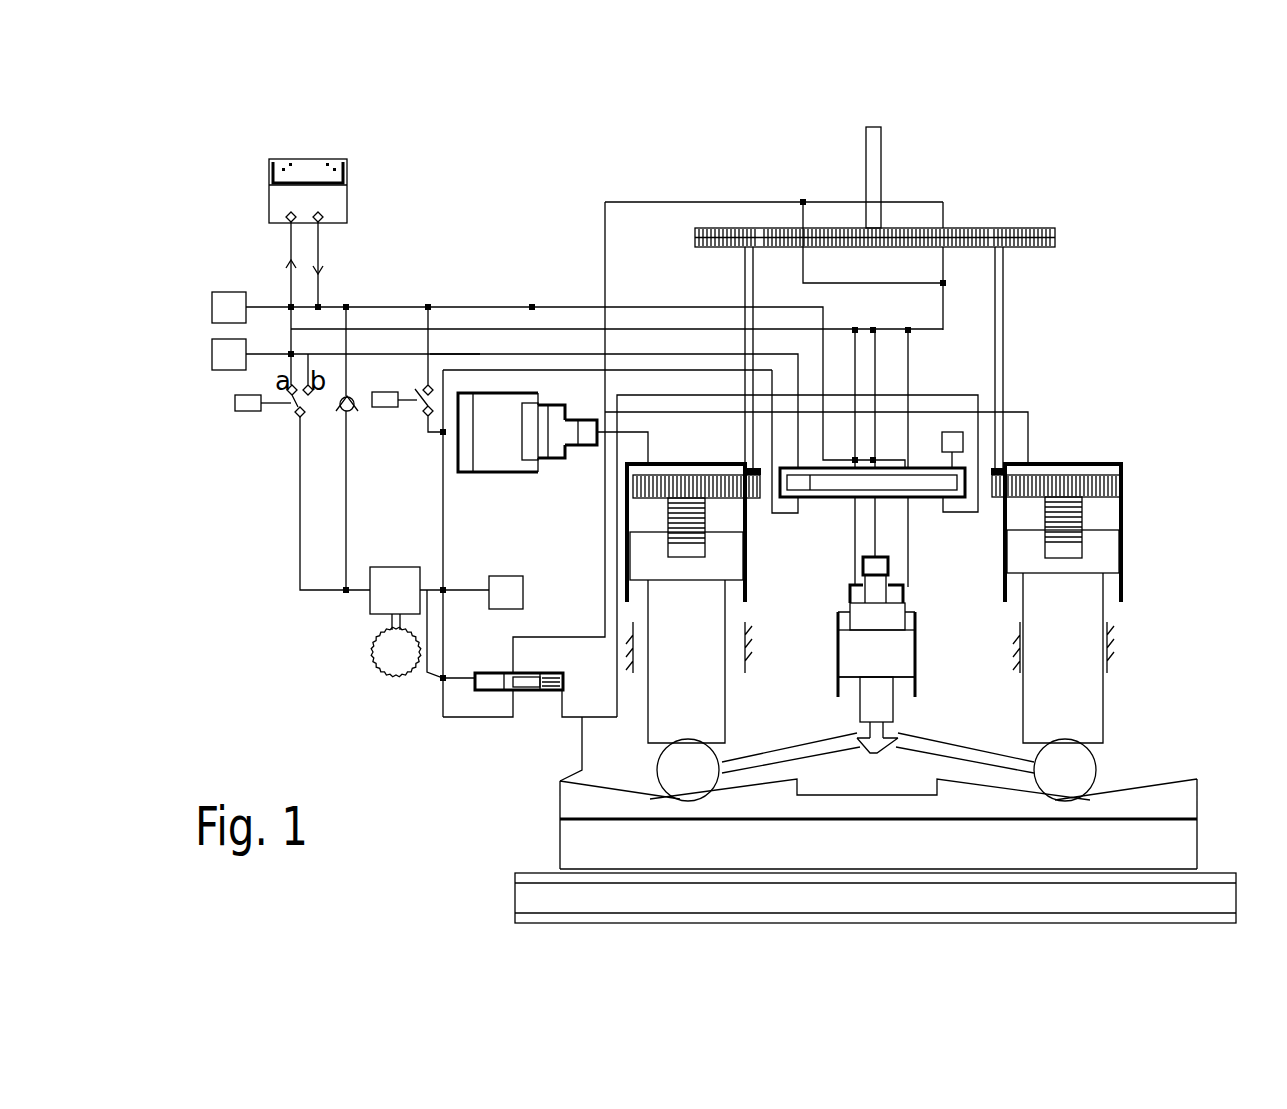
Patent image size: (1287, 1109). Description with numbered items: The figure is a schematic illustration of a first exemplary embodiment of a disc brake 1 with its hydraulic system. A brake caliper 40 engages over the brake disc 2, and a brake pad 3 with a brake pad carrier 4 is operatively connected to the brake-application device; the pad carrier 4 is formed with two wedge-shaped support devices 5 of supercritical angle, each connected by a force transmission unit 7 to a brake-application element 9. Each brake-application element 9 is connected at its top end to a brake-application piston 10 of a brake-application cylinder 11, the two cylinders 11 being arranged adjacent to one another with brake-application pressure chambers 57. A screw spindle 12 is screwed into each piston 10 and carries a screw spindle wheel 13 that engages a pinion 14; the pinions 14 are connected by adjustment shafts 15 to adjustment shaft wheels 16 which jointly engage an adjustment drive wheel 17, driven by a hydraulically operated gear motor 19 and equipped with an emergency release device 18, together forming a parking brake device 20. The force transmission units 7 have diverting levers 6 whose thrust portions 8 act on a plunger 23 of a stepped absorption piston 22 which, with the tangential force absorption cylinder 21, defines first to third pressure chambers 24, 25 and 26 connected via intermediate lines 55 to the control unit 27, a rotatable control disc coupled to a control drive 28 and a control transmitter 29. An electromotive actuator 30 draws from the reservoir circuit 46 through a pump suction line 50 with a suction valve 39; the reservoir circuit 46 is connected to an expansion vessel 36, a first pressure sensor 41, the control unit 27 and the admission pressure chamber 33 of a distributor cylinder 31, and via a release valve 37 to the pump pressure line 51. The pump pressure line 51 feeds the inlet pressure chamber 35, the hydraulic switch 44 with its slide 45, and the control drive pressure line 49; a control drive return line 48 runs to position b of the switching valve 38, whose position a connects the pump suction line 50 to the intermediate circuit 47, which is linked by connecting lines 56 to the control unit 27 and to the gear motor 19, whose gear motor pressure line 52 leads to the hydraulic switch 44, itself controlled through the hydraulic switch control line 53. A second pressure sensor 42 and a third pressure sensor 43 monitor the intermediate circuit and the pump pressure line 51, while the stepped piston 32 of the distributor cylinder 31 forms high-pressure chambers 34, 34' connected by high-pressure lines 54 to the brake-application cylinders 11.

The disc brake 1 is at (1221, 187).
The brake disc 2 is at (1225, 897).
The brake pad 3 is at (1185, 847).
The brake pad carrier 4 is at (1187, 797).
The wedge-shaped support device 5 is at (617, 790).
The diverting lever 6 is at (940, 753).
The force transmission unit 7 is at (672, 795).
The thrust portion 8 is at (877, 753).
The brake-application element 9 is at (700, 700).
The brake-application piston 10 is at (722, 555).
The brake-application cylinder 11 is at (744, 600).
The screw spindle 12 is at (690, 522).
The screw spindle wheel 13 is at (690, 487).
The pinion 14 is at (752, 490).
The adjustment shaft 15 is at (745, 288).
The adjustment shaft wheel 16 is at (718, 228).
The adjustment drive wheel 17 is at (912, 228).
The emergency release device 18 is at (878, 155).
The gear motor 19 is at (836, 193).
The parking brake device 20 is at (963, 128).
The tangential force absorption cylinder 21 is at (915, 670).
The stepped absorption piston 22 is at (900, 655).
The plunger 23 is at (875, 707).
The first pressure chamber 24 is at (905, 620).
The second pressure chamber 25 is at (895, 590).
The third pressure chamber 26 is at (877, 563).
The control unit 27 is at (917, 360).
The control drive 28 is at (805, 506).
The control transmitter 29 is at (955, 430).
The electromotive actuator 30 is at (363, 650).
The distributor cylinder 31 is at (528, 470).
The stepped piston 32 is at (485, 433).
The admission pressure chamber 33 is at (535, 467).
The high-pressure chamber 34 is at (529, 308).
The high-pressure chamber 34' is at (568, 326).
The inlet pressure chamber 35 is at (467, 428).
The expansion vessel 36 is at (347, 160).
The release valve 37 is at (385, 407).
The switching valve 38 is at (249, 411).
The suction valve 39 is at (345, 407).
The brake caliper 40 is at (1110, 655).
The first pressure sensor 41 is at (212, 301).
The second pressure sensor 42 is at (212, 353).
The third pressure sensor 43 is at (505, 576).
The hydraulic switch 44 is at (485, 690).
The slide 45 is at (513, 690).
The reservoir circuit 46 is at (347, 303).
The intermediate circuit 47 is at (433, 329).
The control drive return line 48 is at (455, 354).
The control drive pressure line 49 is at (483, 370).
The pump suction line 50 is at (310, 590).
The pump pressure line 51 is at (426, 672).
The gear motor pressure line 52 is at (633, 202).
The hydraulic switch control line 53 is at (580, 770).
The high-pressure line 54 is at (630, 430).
The intermediate line 55 is at (848, 553).
The connecting line 56 is at (920, 468).
The brake-application pressure chamber 57 is at (715, 485).